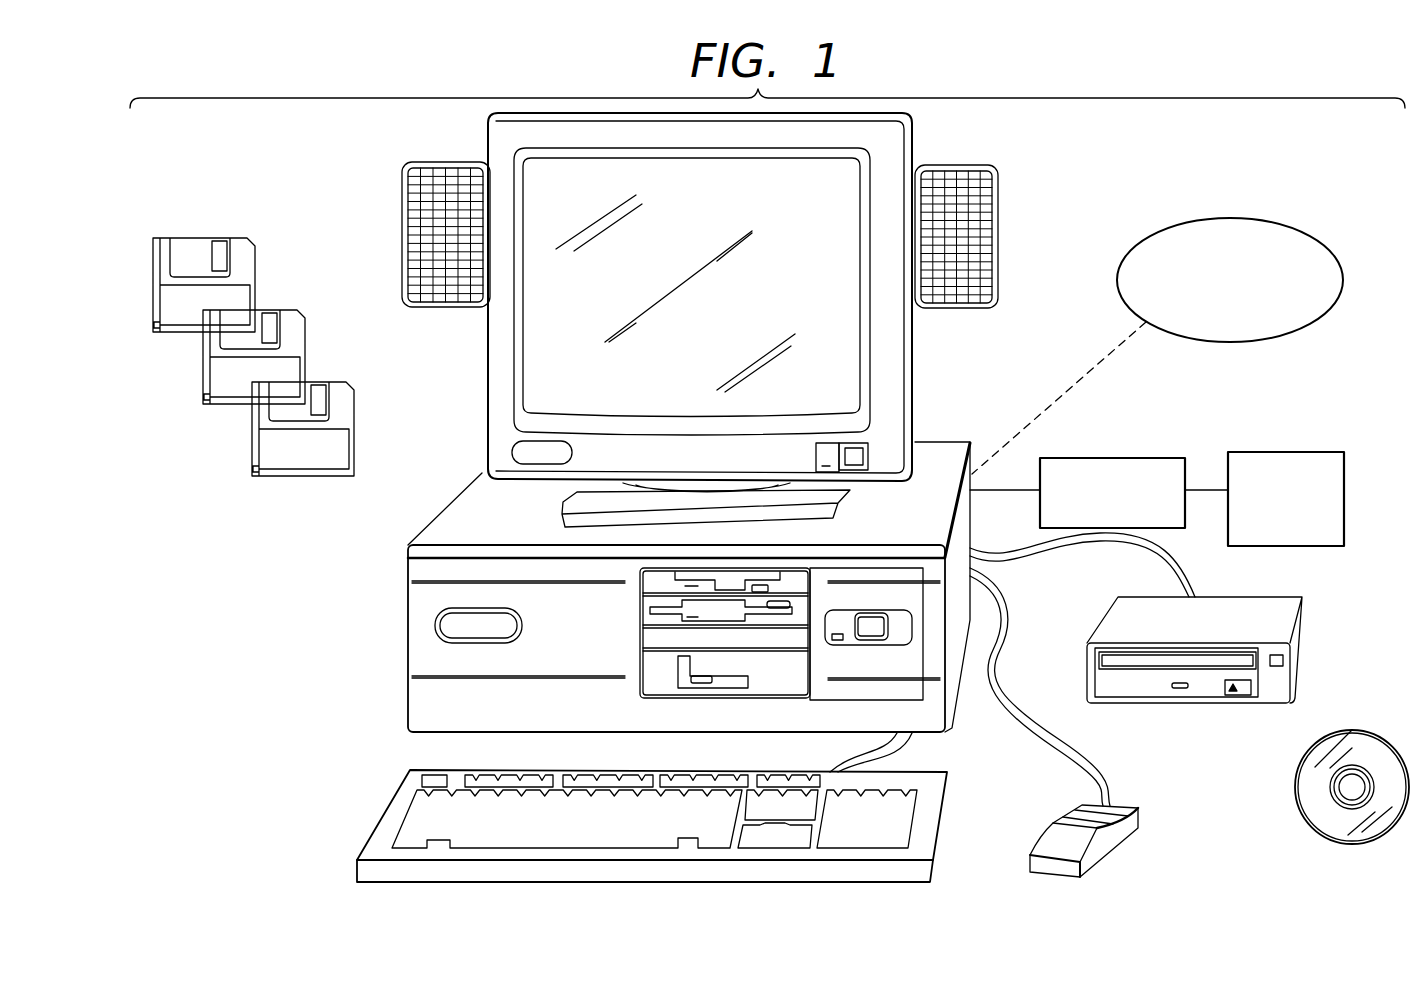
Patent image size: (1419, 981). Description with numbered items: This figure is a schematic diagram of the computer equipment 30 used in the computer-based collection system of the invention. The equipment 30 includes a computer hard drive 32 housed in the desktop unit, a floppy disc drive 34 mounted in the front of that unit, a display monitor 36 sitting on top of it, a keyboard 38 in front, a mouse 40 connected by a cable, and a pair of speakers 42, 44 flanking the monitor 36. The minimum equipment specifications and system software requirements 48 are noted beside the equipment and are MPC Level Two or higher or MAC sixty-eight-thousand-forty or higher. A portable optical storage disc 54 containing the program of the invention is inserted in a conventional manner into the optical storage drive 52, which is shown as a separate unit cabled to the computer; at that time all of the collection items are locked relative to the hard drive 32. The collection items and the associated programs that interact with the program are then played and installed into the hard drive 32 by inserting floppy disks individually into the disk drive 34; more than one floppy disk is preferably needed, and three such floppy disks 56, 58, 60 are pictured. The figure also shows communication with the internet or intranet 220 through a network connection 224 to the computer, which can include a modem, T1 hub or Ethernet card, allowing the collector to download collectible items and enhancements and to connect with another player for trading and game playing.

The computer equipment 30 is at (1120, 178).
The computer hard drive 32 is at (422, 650).
The floppy disc drive 34 is at (652, 620).
The display monitor 36 is at (826, 195).
The keyboard 38 is at (418, 827).
The mouse 40 is at (1050, 840).
The speaker 42 is at (430, 303).
The speaker 44 is at (960, 303).
The minimum equipment specifications and system software requirements 48 is at (1318, 305).
The optical storage drive 52 is at (1252, 625).
The disk 54 is at (1368, 742).
The floppy disk 56 is at (172, 315).
The floppy disk 58 is at (220, 395).
The floppy disk 60 is at (278, 460).
The internet or intranet 220 is at (1290, 452).
The network connection 224 is at (1154, 462).